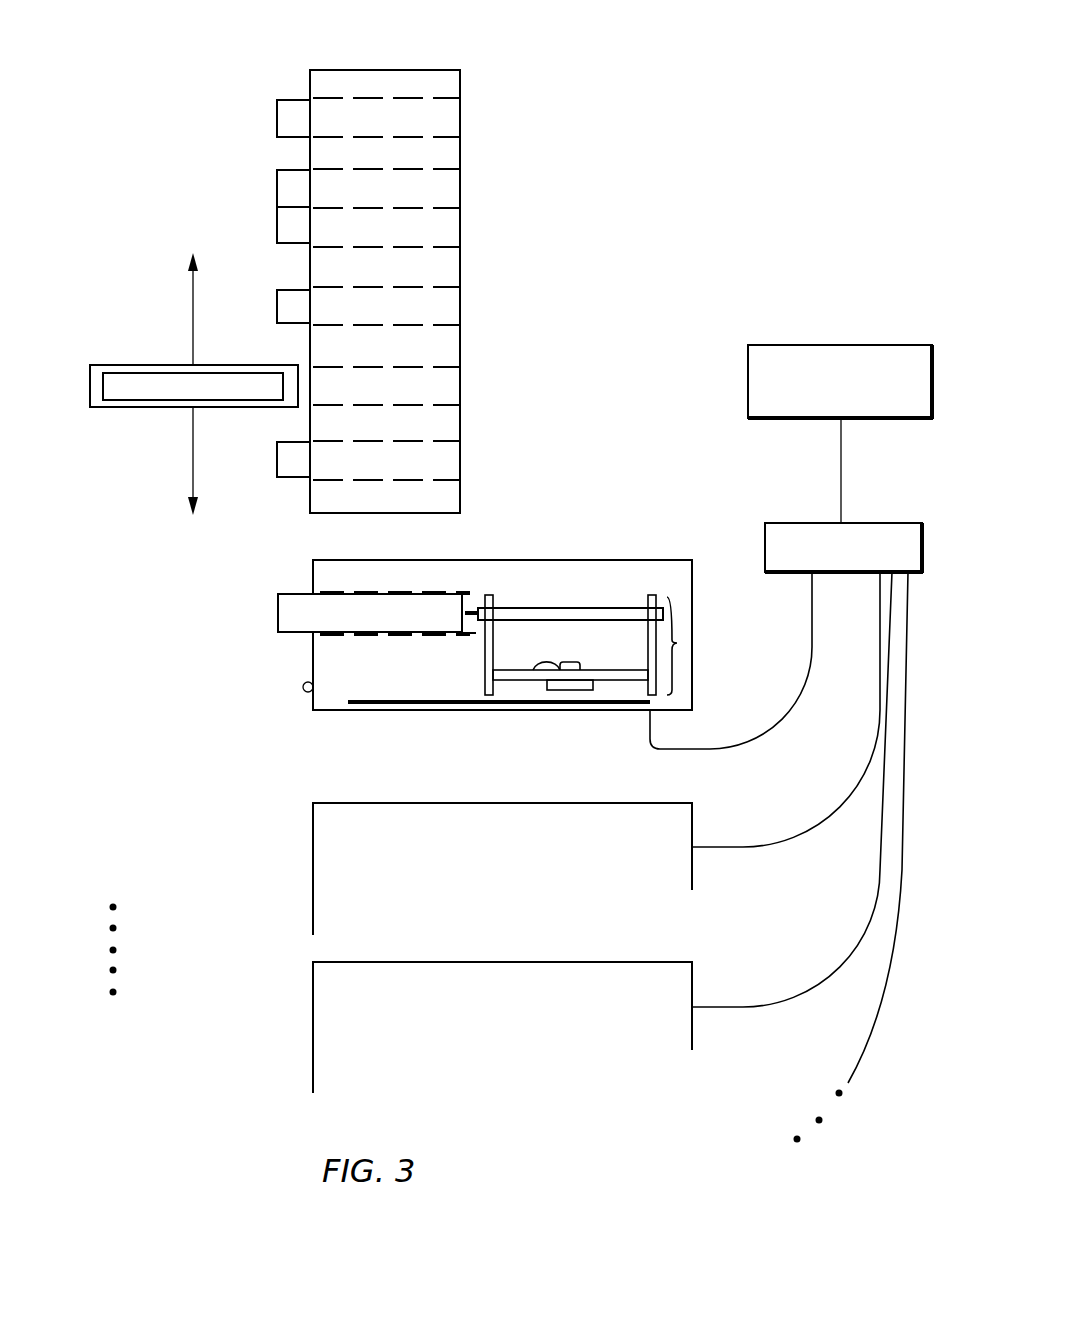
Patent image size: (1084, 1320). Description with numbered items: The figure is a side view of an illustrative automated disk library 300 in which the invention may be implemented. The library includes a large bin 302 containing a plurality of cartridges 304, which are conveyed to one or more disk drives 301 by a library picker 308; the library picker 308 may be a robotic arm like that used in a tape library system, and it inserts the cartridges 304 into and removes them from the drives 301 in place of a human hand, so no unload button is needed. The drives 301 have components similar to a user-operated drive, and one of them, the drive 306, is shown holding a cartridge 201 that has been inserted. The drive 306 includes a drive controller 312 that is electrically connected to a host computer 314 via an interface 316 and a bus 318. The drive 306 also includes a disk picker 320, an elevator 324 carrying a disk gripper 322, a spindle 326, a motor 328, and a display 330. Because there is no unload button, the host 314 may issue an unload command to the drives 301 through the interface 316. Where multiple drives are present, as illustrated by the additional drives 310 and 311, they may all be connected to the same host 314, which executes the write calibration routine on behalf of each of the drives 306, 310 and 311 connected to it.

The automated disk library 300 is at (760, 118).
The bin 302 is at (455, 87).
The cartridges 304 is at (282, 233).
The library picker 308 is at (146, 378).
The drive 306 is at (350, 570).
The disk drive under test 201 is at (290, 615).
The disk gripper 322 is at (468, 608).
The elevator 324 is at (615, 613).
The disk picker 320 is at (677, 643).
The bus 318 is at (767, 732).
The display 330 is at (302, 690).
The drive controller 312 is at (397, 705).
The spindle 326 is at (540, 662).
The motor 328 is at (595, 688).
The disk drives 301 is at (214, 718).
The drive 310 is at (313, 838).
The drive 311 is at (313, 1015).
The host computer 314 is at (810, 345).
The interface 316 is at (860, 523).